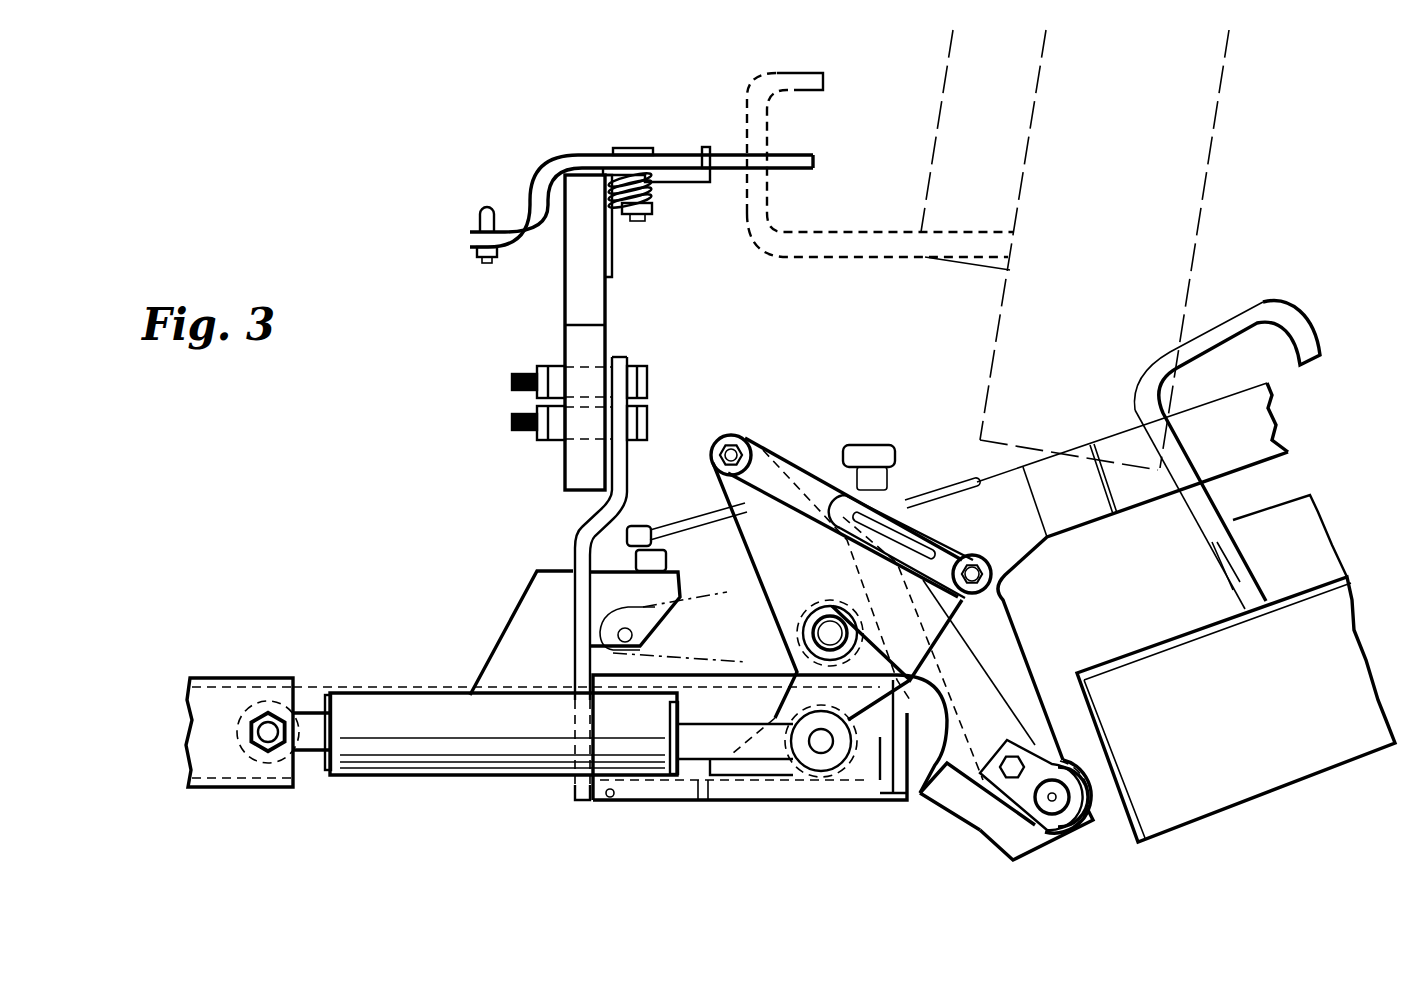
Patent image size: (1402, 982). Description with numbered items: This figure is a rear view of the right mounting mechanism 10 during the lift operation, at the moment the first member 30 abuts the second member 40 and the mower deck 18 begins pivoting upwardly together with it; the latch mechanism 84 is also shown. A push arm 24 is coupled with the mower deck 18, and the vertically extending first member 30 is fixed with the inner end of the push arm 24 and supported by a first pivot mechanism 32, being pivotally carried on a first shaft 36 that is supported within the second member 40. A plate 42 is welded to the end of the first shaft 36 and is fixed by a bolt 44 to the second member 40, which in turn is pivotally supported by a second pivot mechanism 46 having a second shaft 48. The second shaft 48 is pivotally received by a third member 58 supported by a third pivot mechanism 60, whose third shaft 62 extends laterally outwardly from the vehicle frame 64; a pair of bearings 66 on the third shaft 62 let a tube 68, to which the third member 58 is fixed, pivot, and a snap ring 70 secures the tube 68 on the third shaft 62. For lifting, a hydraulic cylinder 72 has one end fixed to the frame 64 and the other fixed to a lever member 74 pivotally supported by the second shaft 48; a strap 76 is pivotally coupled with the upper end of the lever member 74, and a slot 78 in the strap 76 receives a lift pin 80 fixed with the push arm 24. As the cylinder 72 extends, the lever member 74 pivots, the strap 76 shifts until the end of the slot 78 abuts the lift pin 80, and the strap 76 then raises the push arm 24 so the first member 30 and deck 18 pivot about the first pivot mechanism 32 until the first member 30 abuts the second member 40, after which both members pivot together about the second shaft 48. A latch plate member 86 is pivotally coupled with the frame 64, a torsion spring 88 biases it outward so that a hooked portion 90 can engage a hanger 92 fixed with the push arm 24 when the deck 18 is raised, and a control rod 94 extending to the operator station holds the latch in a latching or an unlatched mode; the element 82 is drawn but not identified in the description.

The mounting mechanism 10 is at (805, 410).
The mower deck 18 is at (1000, 317).
The push arm 24 is at (1268, 422).
The first member 30 is at (1031, 628).
The first pivot mechanism 32 is at (1057, 860).
The first shaft 36 is at (1080, 782).
The second member 40 is at (953, 820).
The plate 42 is at (1000, 800).
The bolt 44 is at (1017, 760).
The second pivot mechanism 46 is at (820, 592).
The second shaft 48 is at (805, 657).
The third member 58 is at (773, 710).
The third pivot mechanism 60 is at (658, 818).
The third shaft 62 is at (703, 785).
The vehicle frame 64 is at (607, 292).
The bearings 66 is at (610, 797).
The tube 68 is at (760, 800).
The snap ring 70 is at (897, 793).
The hydraulic cylinder 72 is at (400, 703).
The lever member 74 is at (760, 523).
The strap 76 is at (775, 448).
The slot 78 is at (933, 543).
The lift pin 80 is at (987, 553).
The rod 82 is at (633, 578).
The latch mechanism 84 is at (703, 108).
The latch plate member 86 is at (690, 154).
The torsion spring 88 is at (652, 190).
The hooked portion 90 is at (792, 150).
The hanger 92 is at (750, 97).
The control rod 94 is at (482, 212).